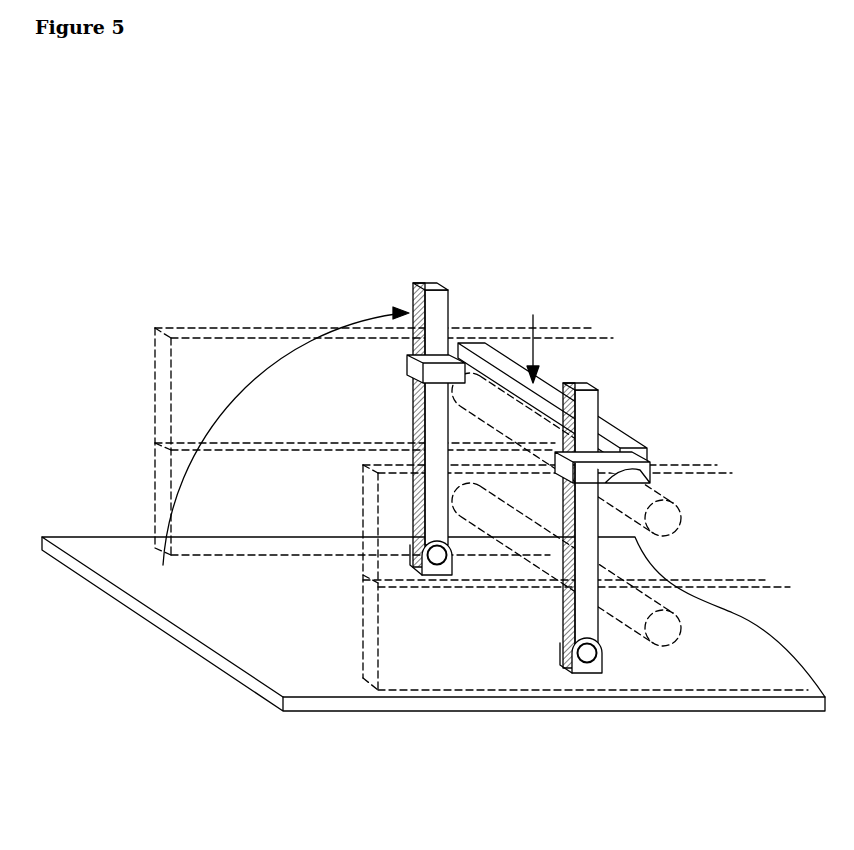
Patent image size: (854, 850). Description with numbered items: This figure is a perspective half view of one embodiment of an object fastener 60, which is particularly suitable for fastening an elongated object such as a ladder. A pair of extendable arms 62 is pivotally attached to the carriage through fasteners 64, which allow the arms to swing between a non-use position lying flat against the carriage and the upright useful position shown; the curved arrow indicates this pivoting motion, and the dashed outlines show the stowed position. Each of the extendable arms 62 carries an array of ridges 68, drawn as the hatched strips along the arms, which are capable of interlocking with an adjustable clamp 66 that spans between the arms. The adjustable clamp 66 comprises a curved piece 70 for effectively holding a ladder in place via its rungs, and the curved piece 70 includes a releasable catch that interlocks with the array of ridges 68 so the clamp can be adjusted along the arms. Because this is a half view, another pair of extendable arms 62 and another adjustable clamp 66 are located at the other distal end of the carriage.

The object fastener 60 is at (84, 248).
The extendable arms 62 is at (448, 299).
The fasteners 64 is at (452, 572).
The adjustable clamp 66 is at (553, 387).
The array of ridges 68 is at (413, 410).
The curved piece 70 is at (477, 370).